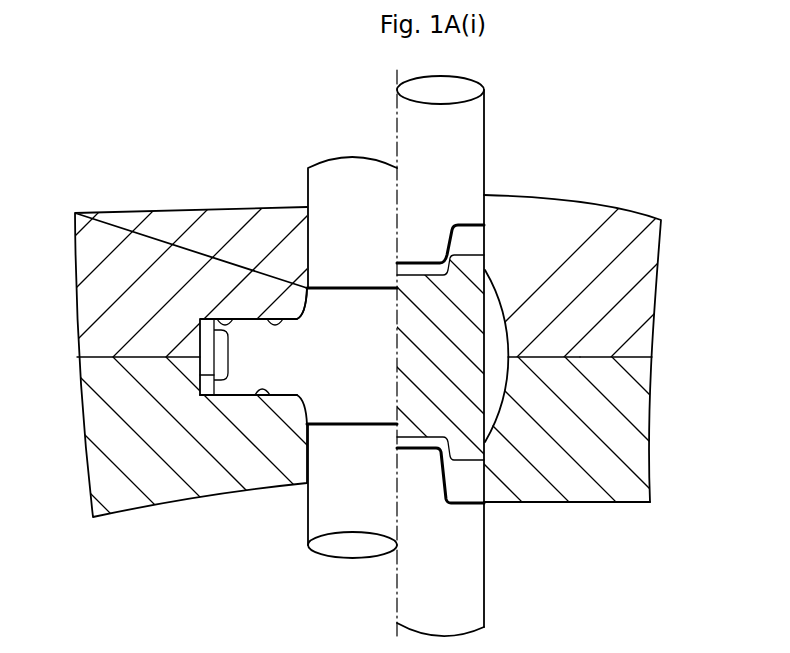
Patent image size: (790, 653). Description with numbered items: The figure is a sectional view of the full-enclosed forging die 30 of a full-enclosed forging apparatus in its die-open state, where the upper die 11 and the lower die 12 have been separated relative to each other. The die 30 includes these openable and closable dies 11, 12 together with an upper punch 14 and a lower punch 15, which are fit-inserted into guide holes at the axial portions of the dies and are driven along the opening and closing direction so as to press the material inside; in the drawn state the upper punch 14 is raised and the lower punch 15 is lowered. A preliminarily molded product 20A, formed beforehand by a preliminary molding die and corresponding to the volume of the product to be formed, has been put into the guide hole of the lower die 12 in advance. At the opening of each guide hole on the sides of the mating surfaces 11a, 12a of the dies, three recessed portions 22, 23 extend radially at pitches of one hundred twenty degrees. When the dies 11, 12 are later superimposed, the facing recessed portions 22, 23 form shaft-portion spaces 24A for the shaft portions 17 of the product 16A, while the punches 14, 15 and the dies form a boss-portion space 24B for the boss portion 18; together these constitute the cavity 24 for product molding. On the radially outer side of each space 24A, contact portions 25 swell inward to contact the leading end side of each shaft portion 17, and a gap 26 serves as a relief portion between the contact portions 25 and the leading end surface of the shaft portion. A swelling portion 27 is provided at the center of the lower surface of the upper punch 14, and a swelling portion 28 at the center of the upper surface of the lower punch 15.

The full-enclosed forging die 30 is at (140, 187).
The upper die 11 is at (532, 195).
The lower die 12 is at (580, 505).
The mating surface of the upper die 11a is at (618, 362).
The mating surface of the lower die 12a is at (618, 351).
The upper punch 14 is at (352, 180).
The lower punch 15 is at (355, 512).
The product 16A is at (352, 286).
The shaft portions 17 is at (250, 332).
The boss portion 18 is at (345, 412).
The preliminarily molded product 20A is at (470, 302).
The recessed portions 22 is at (214, 318).
The recessed portions 23 is at (258, 386).
The cavity 24 is at (235, 395).
The shaft-portion spaces 24A is at (289, 300).
The boss-portion space 24B is at (495, 378).
The contact portions 25 is at (223, 355).
The gap (relief portion) 26 is at (198, 333).
The swelling portion 27 is at (418, 262).
The swelling portion 28 is at (413, 436).